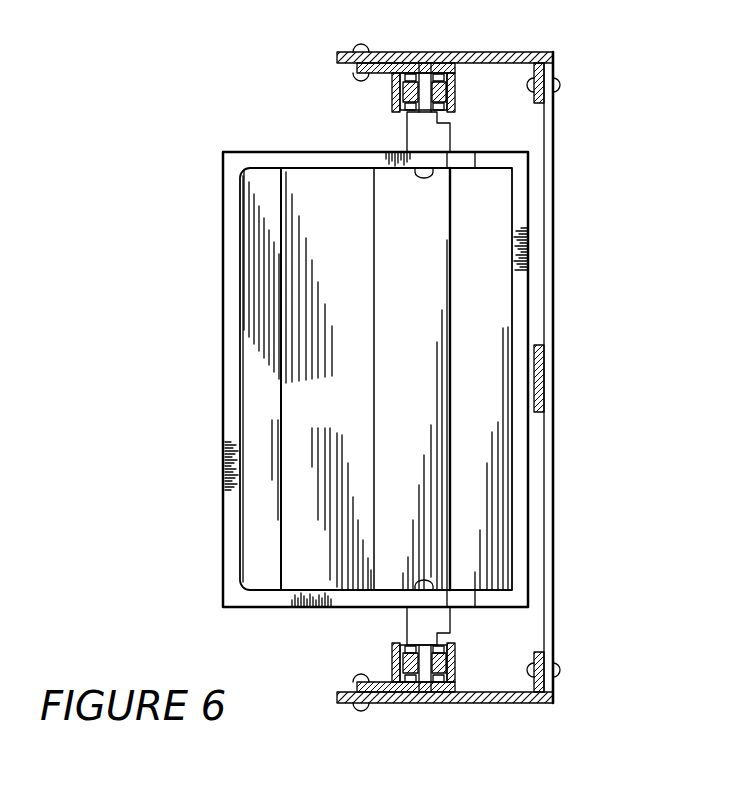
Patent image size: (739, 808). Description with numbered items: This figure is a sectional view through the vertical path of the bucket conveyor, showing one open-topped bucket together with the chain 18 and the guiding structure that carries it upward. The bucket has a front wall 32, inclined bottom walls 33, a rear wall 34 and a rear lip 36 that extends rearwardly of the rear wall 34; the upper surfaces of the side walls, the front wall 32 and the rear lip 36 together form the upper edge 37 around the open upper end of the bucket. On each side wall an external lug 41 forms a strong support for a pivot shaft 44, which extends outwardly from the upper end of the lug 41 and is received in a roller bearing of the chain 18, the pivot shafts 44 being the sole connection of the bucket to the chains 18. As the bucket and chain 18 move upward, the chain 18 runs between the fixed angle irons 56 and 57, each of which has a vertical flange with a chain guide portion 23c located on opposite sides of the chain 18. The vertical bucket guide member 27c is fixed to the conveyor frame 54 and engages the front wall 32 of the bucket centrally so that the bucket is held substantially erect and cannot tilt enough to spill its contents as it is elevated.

The chain 18 is at (415, 76).
The chain guide portion 23c is at (394, 100).
The vertical bucket guide member 27c is at (540, 380).
The front wall 32 is at (528, 303).
The inclined bottom wall 33 is at (425, 416).
The rear wall 34 is at (340, 416).
The rear lip 36 is at (253, 226).
The upper edge 37 is at (293, 158).
The external lug 41 is at (438, 134).
The pivot shaft 44 is at (427, 85).
The conveyor frame 54 is at (528, 53).
The angle iron 56 is at (360, 70).
The angle iron 57 is at (356, 66).